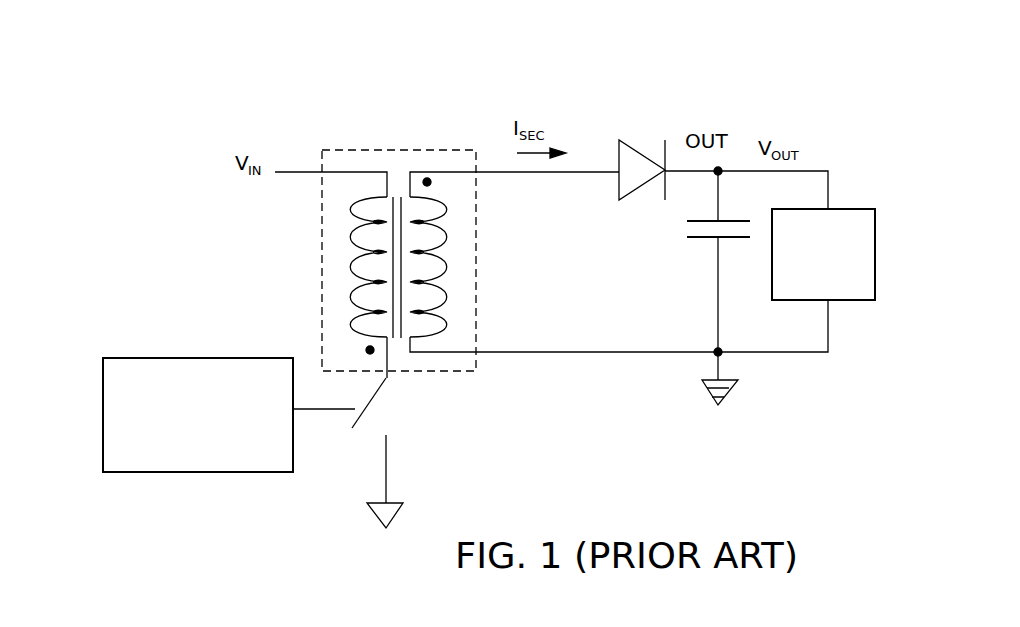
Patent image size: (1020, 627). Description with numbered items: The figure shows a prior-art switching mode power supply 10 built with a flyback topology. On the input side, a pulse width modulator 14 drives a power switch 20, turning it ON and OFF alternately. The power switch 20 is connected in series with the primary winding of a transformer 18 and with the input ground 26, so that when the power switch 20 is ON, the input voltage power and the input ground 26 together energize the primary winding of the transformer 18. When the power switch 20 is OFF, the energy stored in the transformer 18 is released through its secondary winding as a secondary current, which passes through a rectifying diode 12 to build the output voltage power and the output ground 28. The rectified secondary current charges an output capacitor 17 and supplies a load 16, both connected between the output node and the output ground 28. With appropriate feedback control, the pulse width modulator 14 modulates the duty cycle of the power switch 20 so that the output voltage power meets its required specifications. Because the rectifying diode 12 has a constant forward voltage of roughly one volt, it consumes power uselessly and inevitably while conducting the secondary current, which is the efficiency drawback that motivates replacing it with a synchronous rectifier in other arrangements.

The switching mode power supply 10 is at (212, 122).
The rectifying diode 12 is at (628, 140).
The pulse width modulator 14 is at (213, 458).
The load 16 is at (840, 276).
The output capacitor 17 is at (685, 228).
The transformer 18 is at (384, 150).
The power switch 20 is at (393, 408).
The input ground 26 is at (372, 502).
The output ground 28 is at (702, 387).